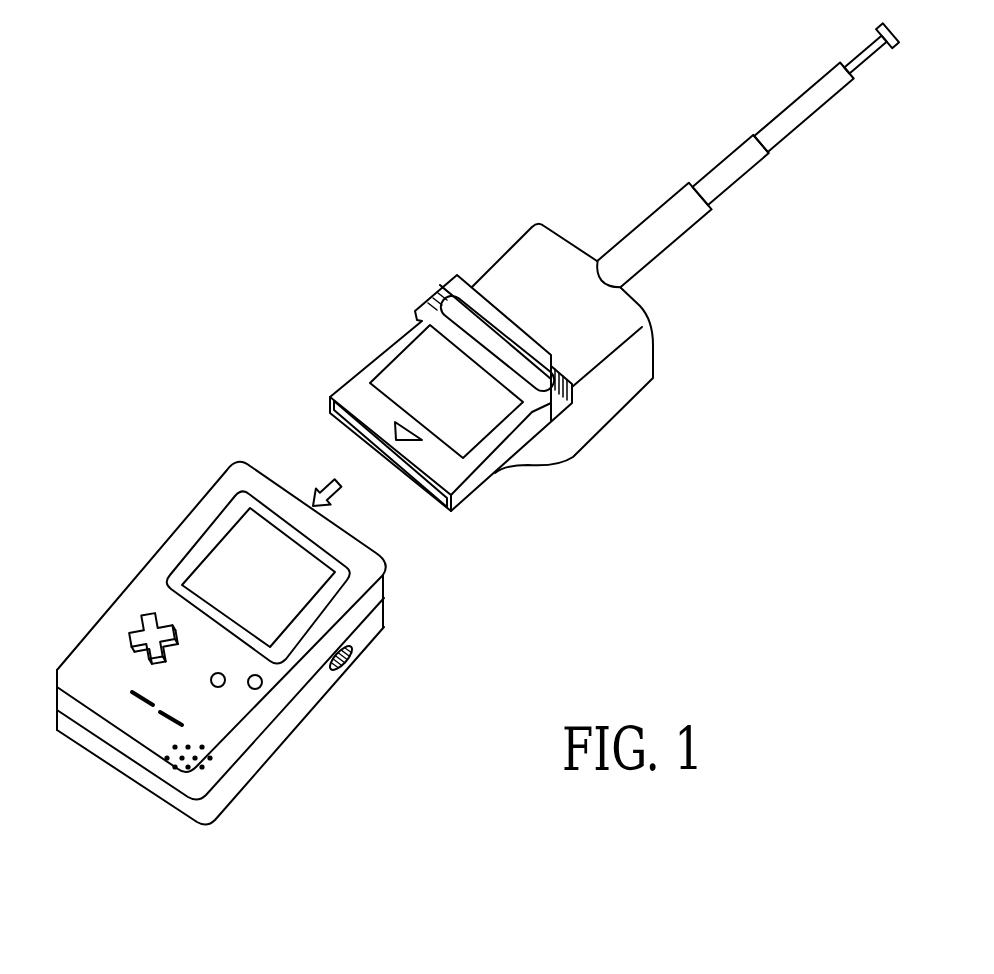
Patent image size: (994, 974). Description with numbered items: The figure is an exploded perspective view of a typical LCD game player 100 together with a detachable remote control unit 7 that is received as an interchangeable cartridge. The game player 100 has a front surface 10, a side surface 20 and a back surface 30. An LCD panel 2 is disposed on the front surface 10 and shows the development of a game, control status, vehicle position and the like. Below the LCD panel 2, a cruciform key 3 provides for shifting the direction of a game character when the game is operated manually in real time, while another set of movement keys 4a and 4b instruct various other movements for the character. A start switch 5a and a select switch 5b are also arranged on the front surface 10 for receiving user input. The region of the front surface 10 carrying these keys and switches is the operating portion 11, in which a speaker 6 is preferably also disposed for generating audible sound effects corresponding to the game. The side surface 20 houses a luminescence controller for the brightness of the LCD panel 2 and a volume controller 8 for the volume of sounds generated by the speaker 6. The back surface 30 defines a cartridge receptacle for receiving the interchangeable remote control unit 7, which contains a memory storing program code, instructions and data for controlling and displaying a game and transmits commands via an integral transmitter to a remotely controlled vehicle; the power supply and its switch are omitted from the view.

The game player 100 is at (170, 500).
The front surface 10 is at (242, 477).
The side surface 20 is at (377, 622).
The operating portion 11 is at (70, 670).
The back surface 30 is at (197, 815).
The LCD panel 2 is at (315, 577).
The cruciform key 3 is at (143, 625).
The movement key 4a is at (260, 683).
The movement key 4b is at (220, 683).
The start switch 5a is at (143, 700).
The select switch 5b is at (167, 718).
The speaker 6 is at (195, 763).
The volume controller 8 is at (347, 657).
The remote control unit 7 is at (640, 365).